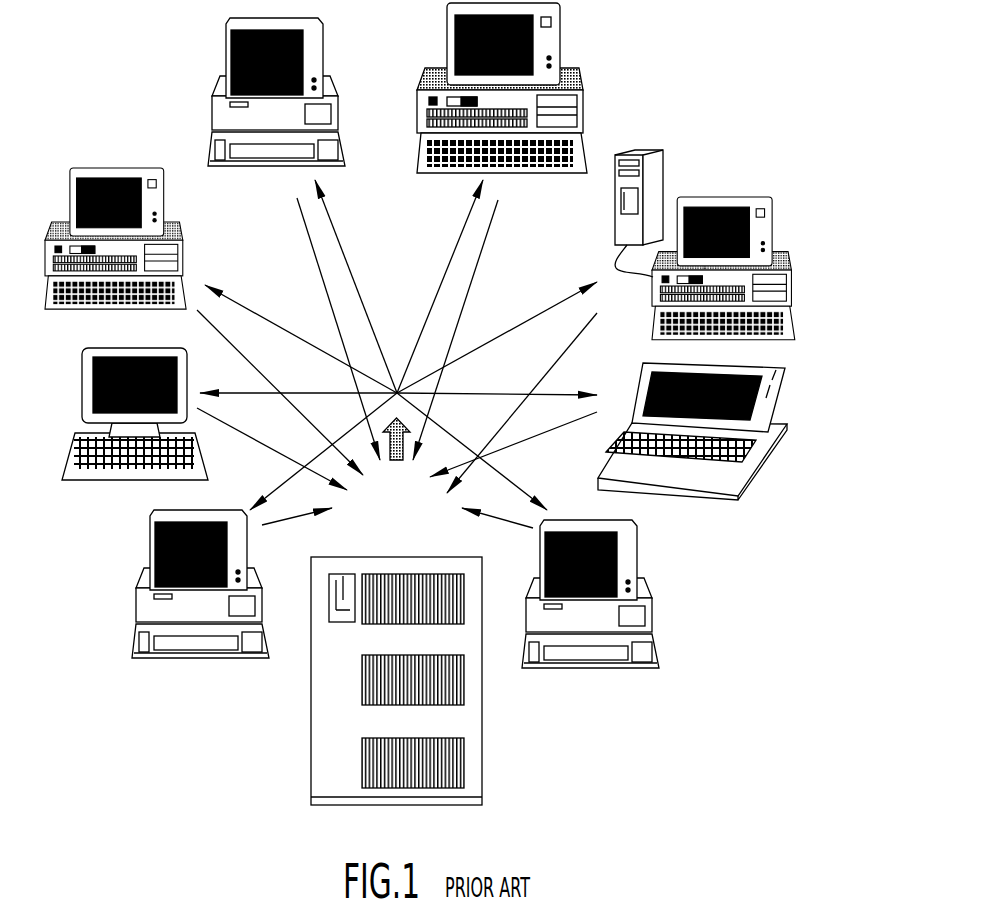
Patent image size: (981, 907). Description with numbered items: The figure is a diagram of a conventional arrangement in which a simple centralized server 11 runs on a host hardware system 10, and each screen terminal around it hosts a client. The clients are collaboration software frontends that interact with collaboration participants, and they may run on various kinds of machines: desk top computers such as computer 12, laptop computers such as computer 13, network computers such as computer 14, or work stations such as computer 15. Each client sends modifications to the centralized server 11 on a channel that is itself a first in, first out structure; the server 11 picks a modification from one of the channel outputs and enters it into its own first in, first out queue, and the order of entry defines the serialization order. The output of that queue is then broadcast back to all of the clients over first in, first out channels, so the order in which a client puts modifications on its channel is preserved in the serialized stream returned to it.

The host hardware system 10 is at (482, 760).
The centralized server 11 is at (298, 518).
The desk top computer 12 is at (567, 55).
The laptop computer 13 is at (785, 408).
The network computer 14 is at (187, 663).
The work station 15 is at (657, 173).